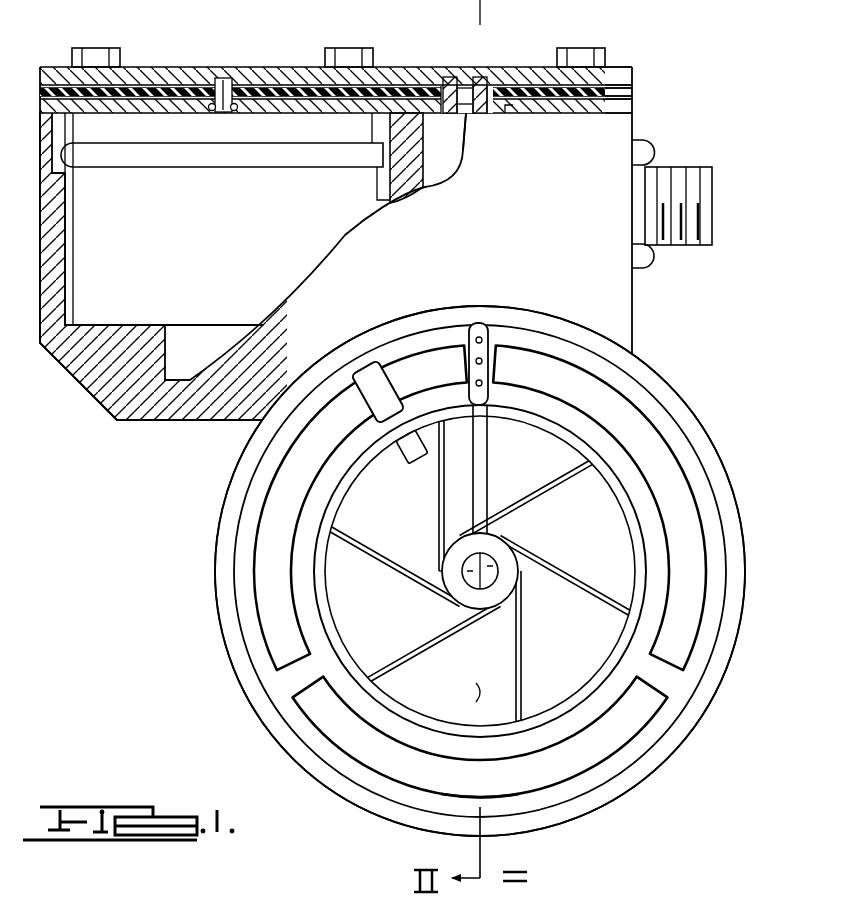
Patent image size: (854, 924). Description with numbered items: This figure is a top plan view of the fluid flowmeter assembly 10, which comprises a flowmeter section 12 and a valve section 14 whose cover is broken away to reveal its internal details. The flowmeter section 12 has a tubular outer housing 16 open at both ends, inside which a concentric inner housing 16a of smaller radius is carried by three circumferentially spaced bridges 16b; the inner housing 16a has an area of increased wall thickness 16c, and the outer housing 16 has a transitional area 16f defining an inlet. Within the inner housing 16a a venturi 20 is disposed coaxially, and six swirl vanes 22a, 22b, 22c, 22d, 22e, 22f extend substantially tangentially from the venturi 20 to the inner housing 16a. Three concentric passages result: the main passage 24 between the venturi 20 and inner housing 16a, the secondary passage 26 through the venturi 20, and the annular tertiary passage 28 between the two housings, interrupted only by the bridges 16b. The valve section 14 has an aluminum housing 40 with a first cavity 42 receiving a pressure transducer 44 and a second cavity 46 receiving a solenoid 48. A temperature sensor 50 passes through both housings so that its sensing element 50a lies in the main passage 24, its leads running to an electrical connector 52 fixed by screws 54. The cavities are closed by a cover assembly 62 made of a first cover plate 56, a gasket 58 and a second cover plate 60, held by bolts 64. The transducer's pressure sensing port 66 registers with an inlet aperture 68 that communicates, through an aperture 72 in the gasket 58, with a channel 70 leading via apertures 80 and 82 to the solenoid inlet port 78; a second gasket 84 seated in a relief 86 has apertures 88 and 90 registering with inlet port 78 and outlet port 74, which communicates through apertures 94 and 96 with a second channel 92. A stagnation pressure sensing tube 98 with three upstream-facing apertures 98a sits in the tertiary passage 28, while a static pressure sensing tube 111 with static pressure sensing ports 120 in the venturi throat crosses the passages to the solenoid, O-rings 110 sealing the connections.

The flowmeter assembly 10 is at (112, 500).
The flowmeter section 12 is at (213, 552).
The valve section 14 is at (82, 391).
The outer housing 16 is at (713, 462).
The inner housing 16a is at (634, 517).
The bridges 16b is at (495, 372).
The area of increased wall thickness 16c is at (630, 537).
The transitional area 16f is at (712, 493).
The venturi 20 is at (512, 543).
The swirl vane 22a is at (597, 596).
The swirl vane 22b is at (525, 655).
The swirl vane 22c is at (430, 652).
The swirl vane 22d is at (393, 568).
The swirl vane 22e is at (437, 513).
The swirl vane 22f is at (570, 477).
The main passage 24 is at (466, 693).
The secondary passage 26 is at (496, 578).
The tertiary passage 28 is at (540, 785).
The housing 40 is at (136, 410).
The first cavity 42 is at (66, 124).
The pressure transducer 44 is at (240, 236).
The second cavity 46 is at (389, 124).
The solenoid 48 is at (464, 173).
The temperature sensor 50 is at (387, 403).
The temperature sensing element 50a is at (411, 463).
The electrical connector 52 is at (705, 187).
The screws 54 is at (652, 150).
The first cover plate 56 is at (618, 100).
The gasket 58 is at (622, 88).
The second cover plate 60 is at (618, 73).
The cover assembly 62 is at (612, 58).
The bolts 64 is at (96, 48).
The pressure sensing port 66 is at (223, 110).
The inlet aperture 68 is at (211, 103).
The channel 70 is at (250, 88).
The aperture 72 is at (222, 78).
The outlet port 74 is at (468, 143).
The inlet port 78 is at (456, 103).
The aperture 80 is at (471, 93).
The aperture 82 is at (461, 88).
The second gasket 84 is at (510, 113).
The relief 86 is at (433, 95).
The aperture 88 is at (452, 96).
The aperture 90 is at (482, 97).
The second channel 92 is at (487, 90).
The aperture 94 is at (490, 100).
The aperture 96 is at (494, 90).
The stagnation pressure sensing tube 98 is at (487, 343).
The apertures 98a is at (470, 380).
The O-rings 110 is at (235, 112).
The static pressure sensing tube 111 is at (485, 440).
The static pressure sensing ports 120 is at (440, 590).